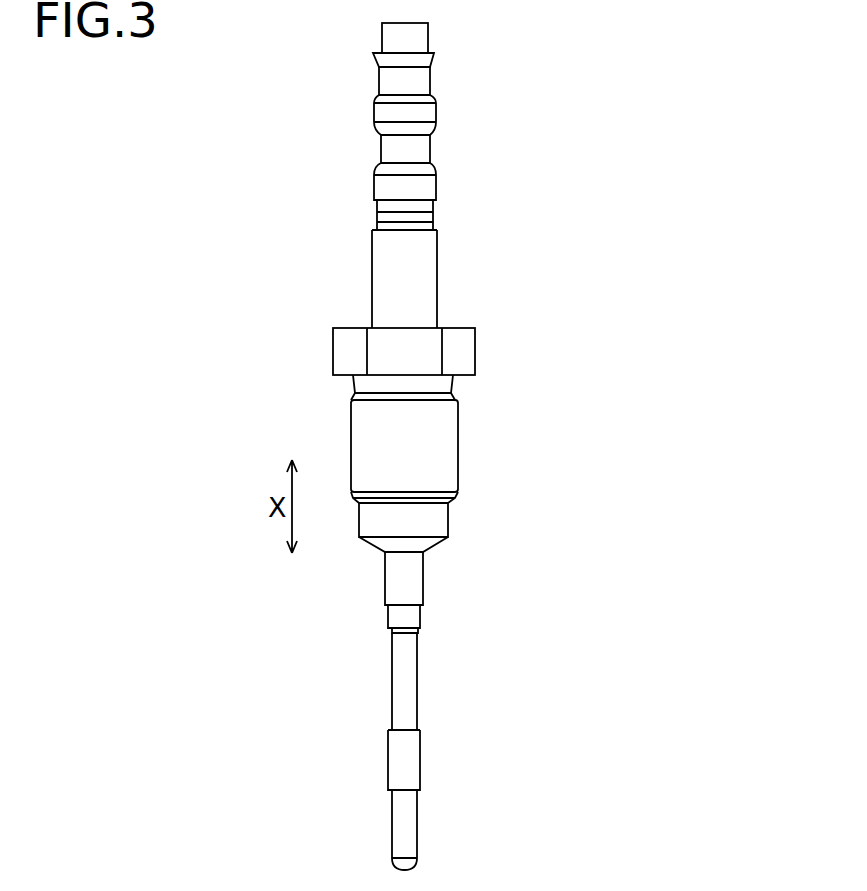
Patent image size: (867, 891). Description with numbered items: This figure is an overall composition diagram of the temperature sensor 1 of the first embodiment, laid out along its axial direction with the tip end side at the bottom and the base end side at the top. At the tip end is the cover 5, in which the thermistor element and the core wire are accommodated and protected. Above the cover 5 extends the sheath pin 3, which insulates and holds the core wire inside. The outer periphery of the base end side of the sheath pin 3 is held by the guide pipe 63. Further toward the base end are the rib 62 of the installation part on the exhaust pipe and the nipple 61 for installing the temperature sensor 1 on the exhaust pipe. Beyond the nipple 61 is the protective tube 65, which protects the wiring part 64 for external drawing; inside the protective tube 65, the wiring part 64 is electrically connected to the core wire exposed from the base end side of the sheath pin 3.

The temperature sensor 1 is at (543, 140).
The wiring part 64 is at (403, 38).
The protective tube 65 is at (415, 273).
The nipple 61 is at (430, 440).
The rib 62 is at (432, 520).
The guide pipe 63 is at (408, 582).
The sheath pin 3 is at (405, 683).
The cover 5 is at (405, 822).